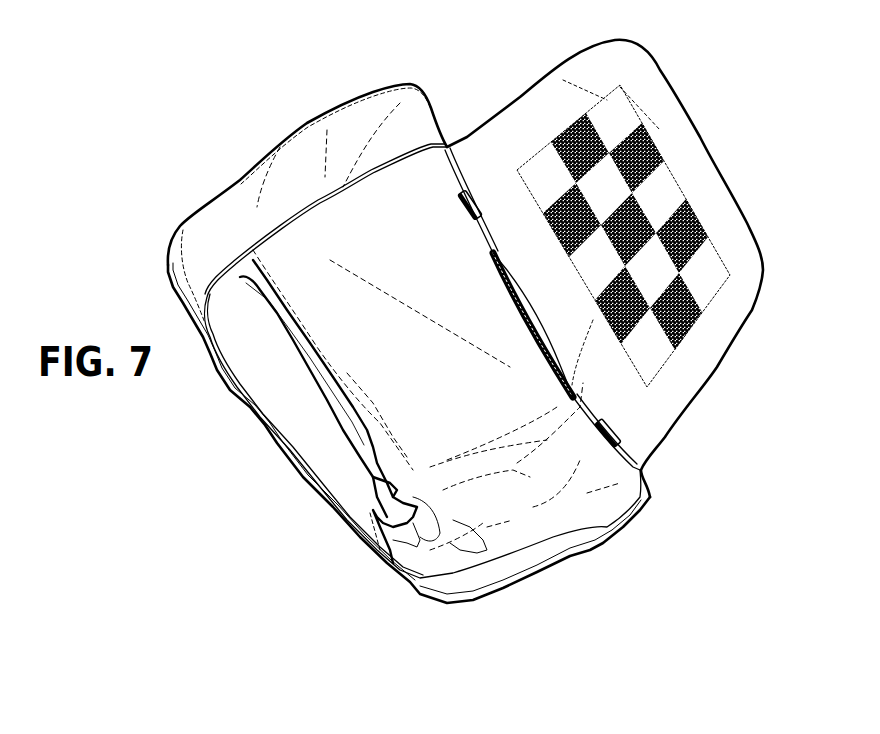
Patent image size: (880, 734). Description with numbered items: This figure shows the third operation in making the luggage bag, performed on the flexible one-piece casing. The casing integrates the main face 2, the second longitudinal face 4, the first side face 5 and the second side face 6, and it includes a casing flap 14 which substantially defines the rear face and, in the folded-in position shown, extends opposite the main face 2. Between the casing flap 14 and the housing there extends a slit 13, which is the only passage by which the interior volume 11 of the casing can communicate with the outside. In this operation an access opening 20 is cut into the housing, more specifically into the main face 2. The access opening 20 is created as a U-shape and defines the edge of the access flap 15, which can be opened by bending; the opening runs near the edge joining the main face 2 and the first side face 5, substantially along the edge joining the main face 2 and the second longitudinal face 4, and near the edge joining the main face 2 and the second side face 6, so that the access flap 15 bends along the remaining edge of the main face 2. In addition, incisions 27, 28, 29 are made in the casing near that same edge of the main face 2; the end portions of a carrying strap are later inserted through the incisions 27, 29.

The main face 2 is at (673, 130).
The second longitudinal face 4 is at (273, 395).
The first side face 5 is at (222, 228).
The second side face 6 is at (520, 533).
The interior volume 11 is at (460, 549).
The slit 13 is at (397, 485).
The casing flap 14 is at (363, 347).
The access flap 15 is at (730, 173).
The access opening 20 is at (558, 514).
The incision 27 is at (617, 442).
The incision 28 is at (555, 353).
The incision 29 is at (470, 190).